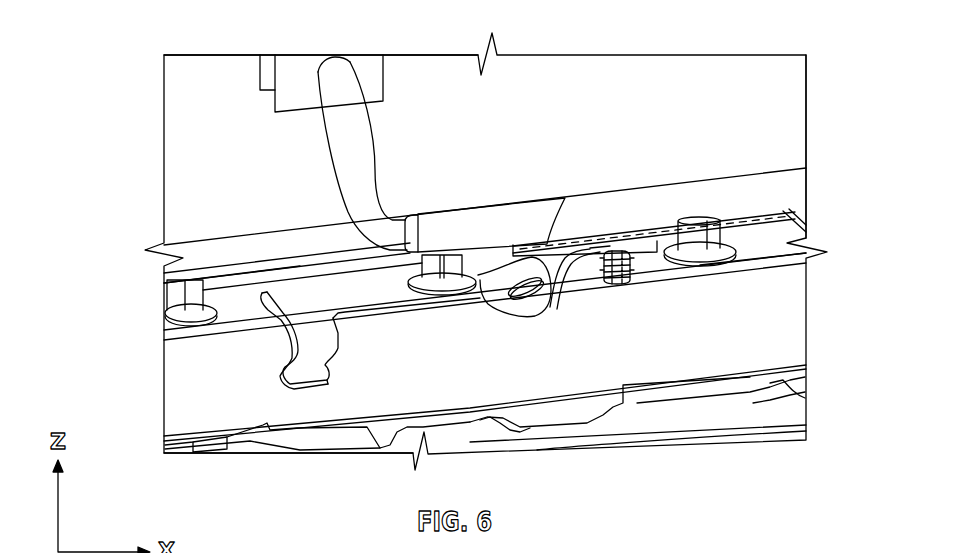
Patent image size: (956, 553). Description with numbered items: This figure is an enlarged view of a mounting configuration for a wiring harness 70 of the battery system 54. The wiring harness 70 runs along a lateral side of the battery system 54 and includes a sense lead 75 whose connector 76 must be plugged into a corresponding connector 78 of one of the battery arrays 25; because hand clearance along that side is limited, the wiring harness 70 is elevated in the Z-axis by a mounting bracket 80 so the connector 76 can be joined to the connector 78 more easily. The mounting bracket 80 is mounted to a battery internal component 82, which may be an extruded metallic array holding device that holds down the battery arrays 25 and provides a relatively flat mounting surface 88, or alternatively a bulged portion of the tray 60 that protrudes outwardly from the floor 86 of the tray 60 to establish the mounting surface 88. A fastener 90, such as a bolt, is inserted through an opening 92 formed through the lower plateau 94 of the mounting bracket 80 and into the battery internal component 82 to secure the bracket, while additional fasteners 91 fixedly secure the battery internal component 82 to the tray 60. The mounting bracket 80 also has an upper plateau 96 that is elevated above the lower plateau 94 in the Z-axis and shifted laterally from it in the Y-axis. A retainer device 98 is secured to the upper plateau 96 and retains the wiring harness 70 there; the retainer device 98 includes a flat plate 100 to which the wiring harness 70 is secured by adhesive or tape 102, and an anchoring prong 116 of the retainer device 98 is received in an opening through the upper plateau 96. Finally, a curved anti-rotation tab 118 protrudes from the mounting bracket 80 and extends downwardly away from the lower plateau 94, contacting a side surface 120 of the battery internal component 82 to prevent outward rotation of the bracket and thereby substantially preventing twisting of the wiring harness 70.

The battery array 25 is at (600, 75).
The battery system 54 is at (762, 34).
The tray 60 is at (252, 447).
The wiring harness 70 is at (670, 197).
The sense lead 75 is at (363, 162).
The connector 76 is at (300, 100).
The connector 78 is at (262, 79).
The mounting bracket 80 is at (383, 316).
The battery internal component 82 is at (565, 375).
The floor 86 is at (253, 437).
The mounting surface 88 is at (773, 253).
The fastener 90 is at (417, 290).
The additional fastener 91 is at (207, 307).
The opening 92 is at (460, 290).
The lower plateau 94 is at (318, 293).
The upper plateau 96 is at (593, 243).
The retainer device 98 is at (616, 281).
The flat plate 100 is at (698, 235).
The adhesive or tape 102 is at (548, 243).
The anchoring prong 116 is at (633, 257).
The anti-rotation tab 118 is at (307, 333).
The side surface 120 is at (217, 413).